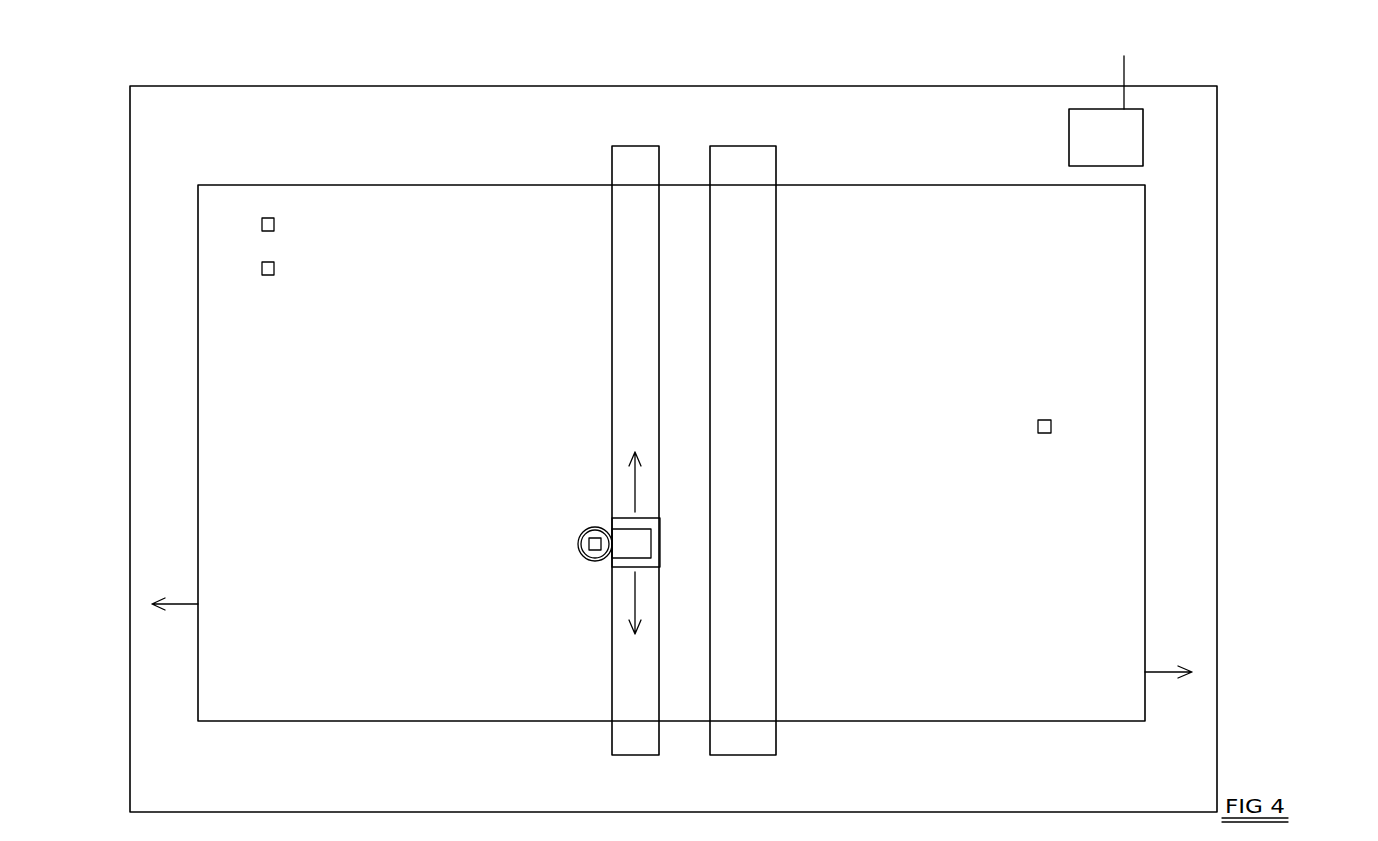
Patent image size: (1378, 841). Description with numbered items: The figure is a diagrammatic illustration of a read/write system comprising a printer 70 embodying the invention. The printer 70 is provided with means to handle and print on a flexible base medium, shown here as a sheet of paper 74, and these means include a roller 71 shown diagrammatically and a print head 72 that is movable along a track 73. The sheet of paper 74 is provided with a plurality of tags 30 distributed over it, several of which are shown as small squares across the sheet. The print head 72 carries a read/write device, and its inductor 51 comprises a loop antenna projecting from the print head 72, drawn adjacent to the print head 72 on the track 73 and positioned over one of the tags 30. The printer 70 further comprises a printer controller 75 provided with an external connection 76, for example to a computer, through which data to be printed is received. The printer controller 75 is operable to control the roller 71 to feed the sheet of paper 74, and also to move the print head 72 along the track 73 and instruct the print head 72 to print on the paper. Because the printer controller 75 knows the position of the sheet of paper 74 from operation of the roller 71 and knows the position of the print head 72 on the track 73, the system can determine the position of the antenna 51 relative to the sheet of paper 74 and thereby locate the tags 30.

The tags 30 is at (268, 218).
The inductor 51 is at (580, 556).
The printer 70 is at (690, 812).
The roller 71 is at (725, 152).
The print head 72 is at (620, 568).
The track 73 is at (635, 152).
The sheet of paper 74 is at (882, 193).
The printer controller 75 is at (1130, 142).
The external connection 76 is at (1124, 78).